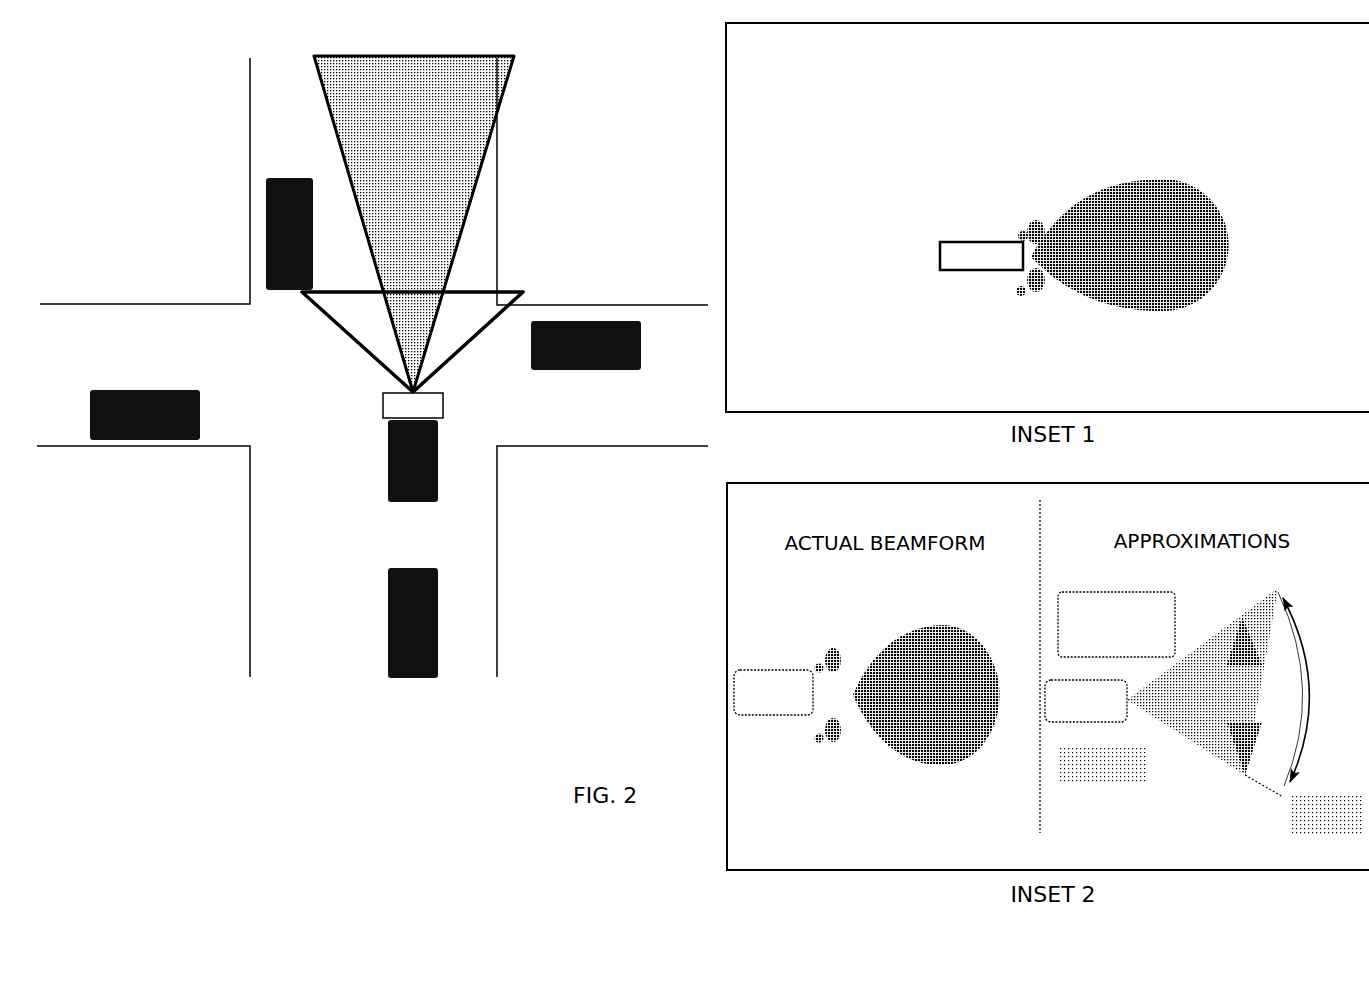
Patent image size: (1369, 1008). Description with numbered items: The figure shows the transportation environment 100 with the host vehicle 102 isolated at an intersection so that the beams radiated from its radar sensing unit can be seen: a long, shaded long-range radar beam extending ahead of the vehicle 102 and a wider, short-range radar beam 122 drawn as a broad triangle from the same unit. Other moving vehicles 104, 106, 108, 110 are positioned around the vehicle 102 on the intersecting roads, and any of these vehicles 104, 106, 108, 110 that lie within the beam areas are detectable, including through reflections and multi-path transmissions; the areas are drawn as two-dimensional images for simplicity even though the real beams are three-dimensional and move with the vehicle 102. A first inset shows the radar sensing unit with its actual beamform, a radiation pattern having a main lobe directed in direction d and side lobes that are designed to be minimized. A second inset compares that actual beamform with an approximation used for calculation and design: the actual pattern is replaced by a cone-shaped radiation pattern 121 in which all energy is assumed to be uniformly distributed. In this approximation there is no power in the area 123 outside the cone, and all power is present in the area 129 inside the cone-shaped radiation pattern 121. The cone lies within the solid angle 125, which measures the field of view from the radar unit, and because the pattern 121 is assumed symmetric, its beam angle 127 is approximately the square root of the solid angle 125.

The environment 100 is at (144, 107).
The vehicle 102 is at (413, 461).
The vehicle 104 is at (586, 345).
The vehicle 106 is at (413, 623).
The vehicle 108 is at (145, 415).
The vehicle 110 is at (289, 234).
The cone-shaped radiation pattern 121 is at (1208, 752).
The short-range radar beam 122 is at (475, 290).
The area of no power 123 is at (1126, 596).
The solid angle Ω_beam 125 is at (1171, 772).
The beam angle θ_beam 127 is at (1317, 670).
The area of all power 129 is at (1281, 721).